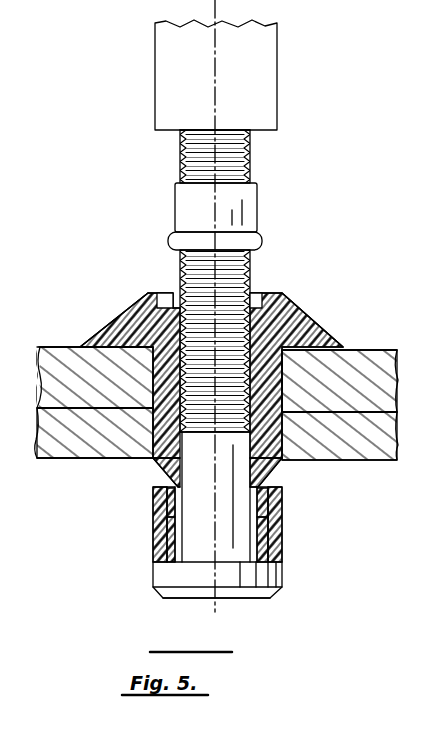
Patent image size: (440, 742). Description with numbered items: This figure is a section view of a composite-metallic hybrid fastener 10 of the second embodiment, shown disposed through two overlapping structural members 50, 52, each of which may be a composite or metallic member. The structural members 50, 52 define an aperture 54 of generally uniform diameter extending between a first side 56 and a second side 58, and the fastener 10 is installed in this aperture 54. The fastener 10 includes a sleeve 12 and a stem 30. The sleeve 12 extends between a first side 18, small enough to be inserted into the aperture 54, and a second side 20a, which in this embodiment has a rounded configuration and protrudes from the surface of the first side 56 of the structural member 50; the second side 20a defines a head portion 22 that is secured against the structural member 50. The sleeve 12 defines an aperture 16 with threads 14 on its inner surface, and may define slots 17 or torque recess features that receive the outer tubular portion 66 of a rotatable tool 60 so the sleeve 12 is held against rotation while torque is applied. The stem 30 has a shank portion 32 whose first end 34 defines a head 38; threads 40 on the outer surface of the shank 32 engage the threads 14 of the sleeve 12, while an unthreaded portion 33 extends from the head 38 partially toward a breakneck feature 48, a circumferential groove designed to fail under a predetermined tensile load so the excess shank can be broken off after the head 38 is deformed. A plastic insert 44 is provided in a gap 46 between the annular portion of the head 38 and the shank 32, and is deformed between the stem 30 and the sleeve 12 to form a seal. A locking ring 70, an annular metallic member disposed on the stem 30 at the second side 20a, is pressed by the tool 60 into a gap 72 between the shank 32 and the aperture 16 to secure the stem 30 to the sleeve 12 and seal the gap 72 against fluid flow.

The composite-metallic hybrid fastener 10 is at (93, 260).
The sleeve 12 is at (118, 310).
The threads 14 is at (94, 433).
The aperture 16 is at (266, 290).
The slots 17 is at (165, 300).
The first side 18 is at (265, 497).
The second side 20a is at (310, 320).
The head portion 22 is at (94, 377).
The stem 30 is at (283, 543).
The shank portion 32 is at (277, 463).
The unthreaded portion 33 is at (192, 522).
The first end 34 is at (188, 600).
The head 38 is at (162, 575).
The threads 40 is at (340, 381).
The plastic insert 44 is at (163, 505).
The gap 46 is at (245, 547).
The breakneck feature 48 is at (312, 323).
The structural member 50 is at (370, 353).
The structural member 52 is at (347, 462).
The aperture 54 is at (160, 464).
The first side 56 is at (72, 346).
The second side 58 is at (75, 462).
The rotatable tool 60 is at (143, 72).
The outer tubular portion 66 is at (262, 102).
The locking ring 70 is at (240, 217).
The gap 72 is at (180, 295).